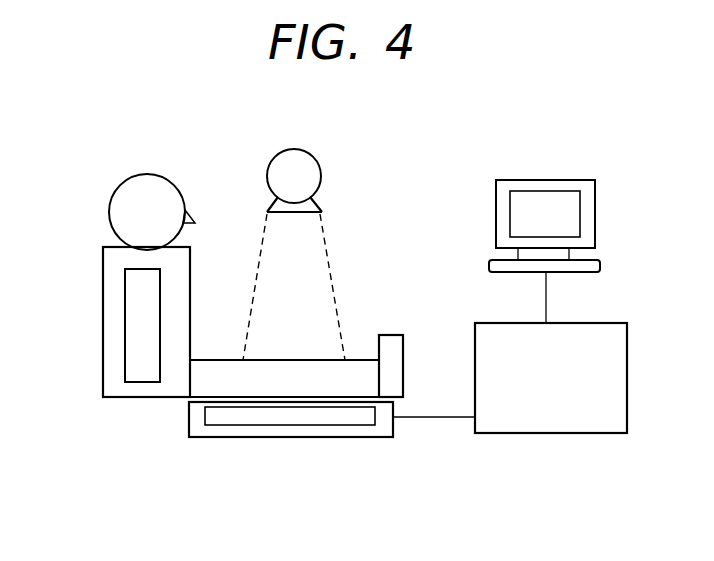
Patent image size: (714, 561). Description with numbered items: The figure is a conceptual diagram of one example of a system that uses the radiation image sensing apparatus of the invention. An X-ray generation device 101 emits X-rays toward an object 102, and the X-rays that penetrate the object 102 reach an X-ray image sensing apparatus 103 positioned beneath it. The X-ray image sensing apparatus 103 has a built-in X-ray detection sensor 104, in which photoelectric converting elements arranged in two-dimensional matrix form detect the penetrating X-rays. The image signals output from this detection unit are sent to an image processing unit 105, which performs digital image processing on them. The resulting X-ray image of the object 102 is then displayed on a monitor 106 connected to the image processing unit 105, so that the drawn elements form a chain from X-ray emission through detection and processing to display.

The X-ray generation device 101 is at (316, 172).
The object 102 is at (135, 361).
The X-ray image sensing apparatus 103 is at (258, 436).
The X-ray detection sensor 104 is at (343, 420).
The image processing unit 105 is at (545, 435).
The monitor 106 is at (540, 180).